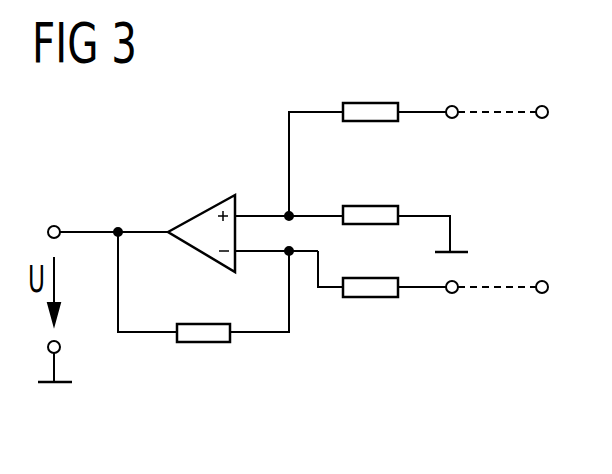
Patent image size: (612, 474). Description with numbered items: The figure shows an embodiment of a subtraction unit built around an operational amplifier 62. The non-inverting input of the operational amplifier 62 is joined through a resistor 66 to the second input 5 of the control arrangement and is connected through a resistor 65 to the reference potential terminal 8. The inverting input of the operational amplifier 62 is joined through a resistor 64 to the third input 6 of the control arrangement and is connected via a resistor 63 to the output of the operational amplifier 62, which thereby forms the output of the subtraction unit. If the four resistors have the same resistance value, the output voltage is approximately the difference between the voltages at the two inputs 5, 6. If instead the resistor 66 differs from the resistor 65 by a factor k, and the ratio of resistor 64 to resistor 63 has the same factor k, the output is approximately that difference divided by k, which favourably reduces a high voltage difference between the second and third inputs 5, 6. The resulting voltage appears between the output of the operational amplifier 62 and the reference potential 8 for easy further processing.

The second input 5 is at (542, 106).
The third input 6 is at (542, 281).
The reference potential terminal 8 is at (458, 250).
The operational amplifier 62 is at (202, 210).
The resistor 63 is at (202, 342).
The resistor 64 is at (369, 297).
The resistor 65 is at (369, 206).
The resistor 66 is at (369, 103).